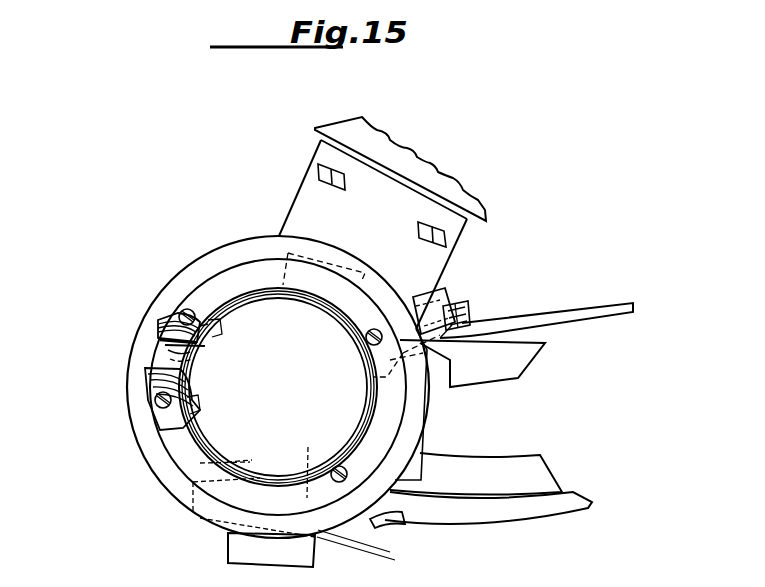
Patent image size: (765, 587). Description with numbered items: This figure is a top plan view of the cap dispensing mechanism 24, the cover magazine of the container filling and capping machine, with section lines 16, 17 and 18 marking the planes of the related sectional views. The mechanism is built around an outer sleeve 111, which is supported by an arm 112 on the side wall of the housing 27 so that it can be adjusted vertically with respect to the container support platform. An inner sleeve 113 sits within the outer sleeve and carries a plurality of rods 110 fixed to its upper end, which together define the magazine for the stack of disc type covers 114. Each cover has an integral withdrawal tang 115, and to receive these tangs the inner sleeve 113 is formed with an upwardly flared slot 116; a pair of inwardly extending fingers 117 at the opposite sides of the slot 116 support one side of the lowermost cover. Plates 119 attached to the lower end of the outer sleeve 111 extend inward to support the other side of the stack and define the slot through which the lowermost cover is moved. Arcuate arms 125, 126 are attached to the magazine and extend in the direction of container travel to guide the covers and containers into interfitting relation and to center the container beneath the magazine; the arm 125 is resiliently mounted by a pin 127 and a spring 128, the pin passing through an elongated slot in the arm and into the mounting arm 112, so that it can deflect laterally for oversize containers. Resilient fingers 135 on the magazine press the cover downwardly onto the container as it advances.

The cap dispensing mechanism 24 is at (146, 294).
The outer sleeve 111 is at (184, 262).
The rods 110 is at (158, 404).
The fingers 117 is at (214, 330).
The slot 116 is at (197, 354).
The withdrawal tang 115 is at (176, 357).
The inner sleeve 113 is at (200, 452).
The plates 119 is at (310, 450).
The disc type covers 114 is at (227, 462).
The arm 112 is at (452, 254).
The housing 27 is at (458, 192).
The spring 128 is at (440, 303).
The pin 127 is at (470, 318).
The arcuate arm 125 is at (513, 319).
The resilient fingers 135 is at (470, 465).
The arcuate arm 126 is at (448, 517).
The section line 18 is at (551, 272).
The section line 17 is at (479, 490).
The section line 16 is at (70, 311).